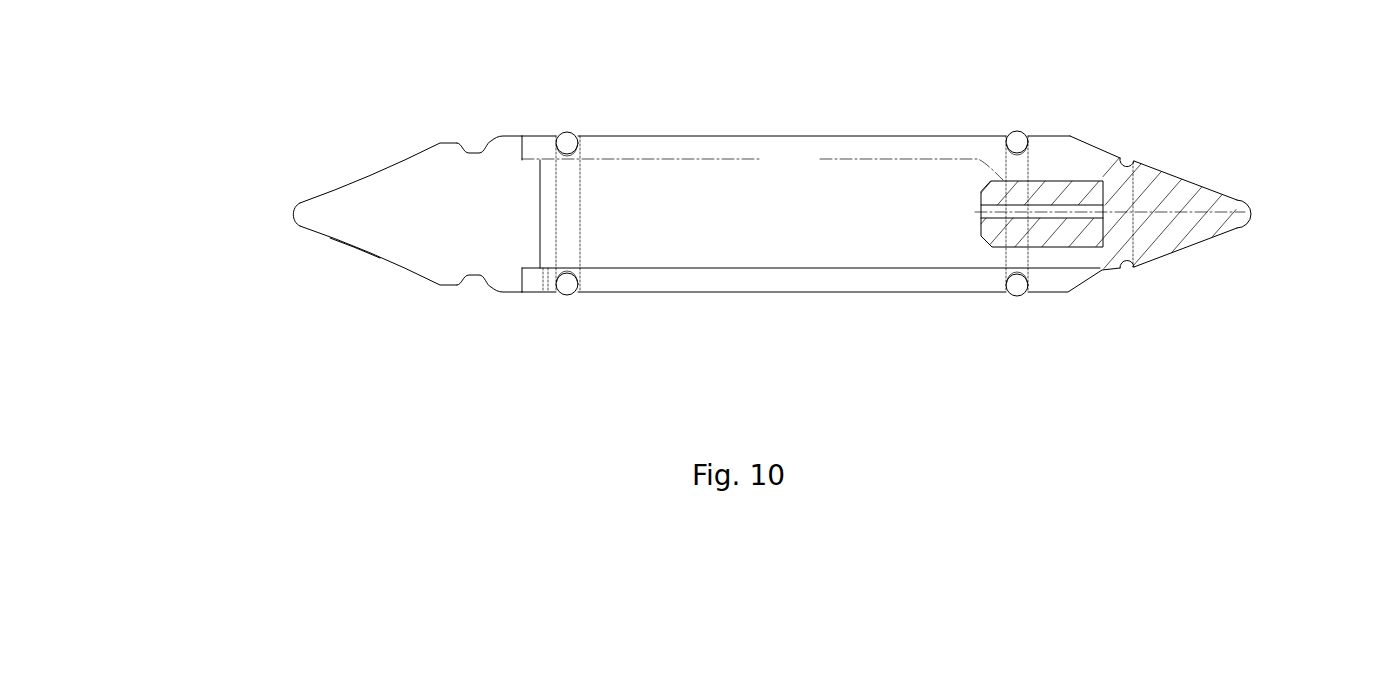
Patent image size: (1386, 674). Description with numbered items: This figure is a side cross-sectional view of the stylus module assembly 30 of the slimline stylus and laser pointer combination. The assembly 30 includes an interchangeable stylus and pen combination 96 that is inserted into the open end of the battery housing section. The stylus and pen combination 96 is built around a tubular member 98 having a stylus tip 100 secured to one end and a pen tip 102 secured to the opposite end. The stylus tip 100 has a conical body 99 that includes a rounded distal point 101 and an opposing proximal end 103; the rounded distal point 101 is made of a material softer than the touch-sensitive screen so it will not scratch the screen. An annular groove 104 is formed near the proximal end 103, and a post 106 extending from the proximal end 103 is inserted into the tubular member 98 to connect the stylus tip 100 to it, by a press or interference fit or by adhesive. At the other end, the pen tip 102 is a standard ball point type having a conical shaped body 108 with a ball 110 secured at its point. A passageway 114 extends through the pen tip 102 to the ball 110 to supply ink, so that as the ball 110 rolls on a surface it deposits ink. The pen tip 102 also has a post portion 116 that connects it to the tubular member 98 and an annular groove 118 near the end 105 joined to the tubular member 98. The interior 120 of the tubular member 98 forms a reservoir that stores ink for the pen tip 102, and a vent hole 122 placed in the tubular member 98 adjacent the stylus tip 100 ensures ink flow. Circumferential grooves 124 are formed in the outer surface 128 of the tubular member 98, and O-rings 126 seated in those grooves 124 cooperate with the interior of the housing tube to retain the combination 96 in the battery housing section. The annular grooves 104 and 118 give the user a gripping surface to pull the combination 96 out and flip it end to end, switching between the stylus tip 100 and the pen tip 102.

The stylus module assembly 30 is at (825, 313).
The stylus and pen combination 96 is at (845, 132).
The tubular member 98 is at (788, 288).
The conical body 99 is at (358, 202).
The stylus tip 100 is at (353, 250).
The rounded distal point 101 is at (288, 216).
The pen tip 102 is at (1220, 178).
The proximal end 103 is at (511, 297).
The annular groove 104 is at (481, 141).
The end 105 is at (1108, 148).
The post 106 is at (535, 214).
The conical shaped body 108 is at (1190, 170).
The ball 110 is at (1266, 225).
The passageway 114 is at (1214, 215).
The post portion 116 is at (993, 237).
The annular groove 118 is at (1128, 153).
The interior 120 is at (714, 207).
The vent hole 122 is at (548, 297).
The circumferential grooves 124 is at (580, 170).
The O-rings 126 is at (1020, 129).
The outer surface 128 is at (905, 297).